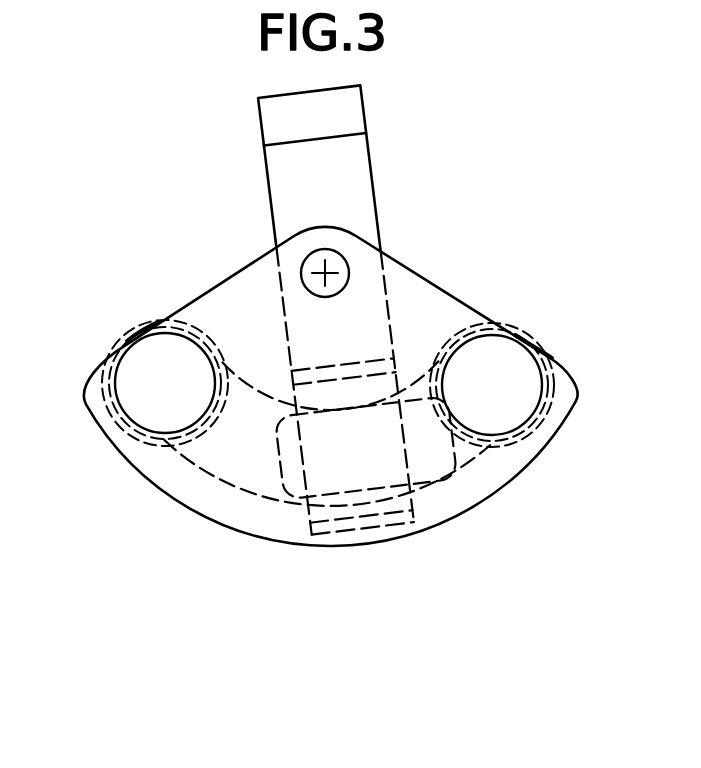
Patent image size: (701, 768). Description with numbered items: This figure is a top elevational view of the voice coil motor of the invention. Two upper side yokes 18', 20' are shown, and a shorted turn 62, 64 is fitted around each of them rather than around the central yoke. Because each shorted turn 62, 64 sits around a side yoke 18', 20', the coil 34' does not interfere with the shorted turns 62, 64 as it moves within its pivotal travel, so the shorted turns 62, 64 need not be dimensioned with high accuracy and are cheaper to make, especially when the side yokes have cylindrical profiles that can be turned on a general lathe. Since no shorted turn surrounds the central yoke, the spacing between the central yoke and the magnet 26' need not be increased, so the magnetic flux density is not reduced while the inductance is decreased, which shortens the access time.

The upper side yoke 18' is at (538, 383).
The upper side yoke 20' is at (122, 383).
The magnet 26' is at (327, 482).
The coil 34' is at (385, 557).
The shorted turn 62 is at (543, 343).
The shorted turn 64 is at (121, 334).